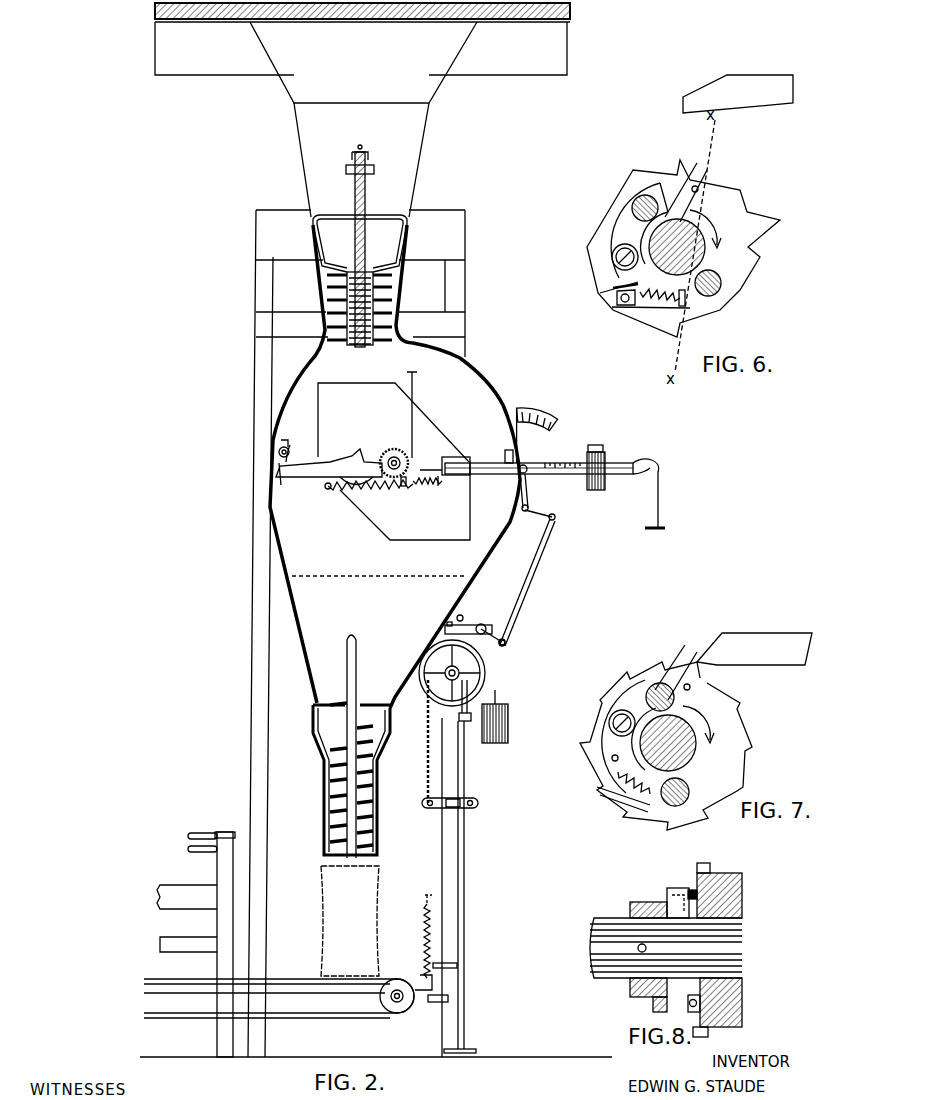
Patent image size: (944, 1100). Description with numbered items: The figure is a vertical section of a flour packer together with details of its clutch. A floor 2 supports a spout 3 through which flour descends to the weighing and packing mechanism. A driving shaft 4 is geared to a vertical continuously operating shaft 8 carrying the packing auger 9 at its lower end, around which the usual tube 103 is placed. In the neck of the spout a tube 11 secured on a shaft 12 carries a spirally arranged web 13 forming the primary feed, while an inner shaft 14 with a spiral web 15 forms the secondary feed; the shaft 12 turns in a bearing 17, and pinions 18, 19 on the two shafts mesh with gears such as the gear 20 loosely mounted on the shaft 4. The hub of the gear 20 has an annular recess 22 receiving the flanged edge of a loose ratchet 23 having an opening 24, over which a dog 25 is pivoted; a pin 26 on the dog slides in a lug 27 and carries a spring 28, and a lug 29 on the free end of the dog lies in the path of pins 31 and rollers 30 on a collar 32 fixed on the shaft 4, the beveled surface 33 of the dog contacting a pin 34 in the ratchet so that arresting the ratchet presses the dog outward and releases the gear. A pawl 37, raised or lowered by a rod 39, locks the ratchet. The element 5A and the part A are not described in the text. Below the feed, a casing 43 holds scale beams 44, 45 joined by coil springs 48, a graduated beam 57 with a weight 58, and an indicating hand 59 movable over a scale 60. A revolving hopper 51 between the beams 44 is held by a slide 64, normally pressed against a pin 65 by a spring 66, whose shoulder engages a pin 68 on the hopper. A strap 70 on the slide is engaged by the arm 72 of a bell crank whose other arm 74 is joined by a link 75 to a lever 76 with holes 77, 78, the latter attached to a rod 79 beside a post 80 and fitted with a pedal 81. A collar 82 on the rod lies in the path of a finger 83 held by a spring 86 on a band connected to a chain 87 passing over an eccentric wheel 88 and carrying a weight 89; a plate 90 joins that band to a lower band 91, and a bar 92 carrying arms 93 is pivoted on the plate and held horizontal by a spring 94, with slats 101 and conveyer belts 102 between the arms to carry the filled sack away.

In FIG. 2, the floor 2 is at (572, 14).
In FIG. 2, the spout 3 is at (361, 119).
In FIG. 2, the driving shaft 4 is at (362, 146).
In FIG. 2, the pinion 19 is at (368, 156).
In FIG. 2, the pinion 18 is at (374, 170).
In FIG. 2, the bearing 17 is at (354, 203).
In FIG. 2, the shaft 14 is at (367, 203).
In FIG. 2, the shaft 12 is at (378, 243).
In FIG. 2, the spirally arranged web 13 is at (347, 280).
In FIG. 2, the tube 11 is at (370, 340).
In FIG. 2, the spiral web 15 is at (352, 348).
In FIG. 2, the rod 39 is at (415, 375).
In FIG. 2, the revolving hopper 51 is at (360, 414).
In FIG. 2, the pin 68 is at (351, 426).
In FIG. 2, the pin 65 is at (438, 470).
In FIG. 2, the slide 64 is at (458, 457).
In FIG. 2, the scale beam 44 is at (474, 462).
In FIG. 2, the scale 60 is at (540, 412).
In FIG. 2, the indicating hand 59 is at (530, 446).
In FIG. 2, the graduated beam 57 is at (653, 457).
In FIG. 2, the scale beam 45 is at (329, 462).
In FIG. 2, the coil spring 48 is at (330, 490).
In FIG. 2, the gear 5A is at (392, 468).
In FIG. 2, the spring 66 is at (428, 484).
In FIG. 2, the strap 70 is at (505, 470).
In FIG. 2, the arm 72 is at (530, 494).
In FIG. 2, the arm 74 is at (555, 517).
In FIG. 2, the weight 58 is at (597, 490).
In FIG. 2, the link 75 is at (548, 538).
In FIG. 2, the shell or casing 43 is at (283, 548).
In FIG. 2, the hole 77 is at (462, 616).
In FIG. 2, the hole 78 is at (470, 624).
In FIG. 2, the lever 76 is at (505, 640).
In FIG. 2, the vertical continuously operating shaft 8 is at (357, 665).
In FIG. 2, the eccentrically mounted wheel 88 is at (486, 668).
In FIG. 2, the chain 87 is at (487, 690).
In FIG. 2, the adjustable collar 82 is at (458, 718).
In FIG. 2, the weight 89 is at (509, 728).
In FIG. 2, the post 80 is at (442, 750).
In FIG. 2, the longitudinally movable rod 79 is at (468, 765).
In FIG. 2, the spring 86 is at (458, 800).
In FIG. 2, the finger 83 is at (470, 808).
In FIG. 2, the packing auger 9 is at (330, 797).
In FIG. 2, the tube 103 is at (378, 832).
In FIG. 2, the plate 90 is at (440, 880).
In FIG. 2, the spring 94 is at (424, 944).
In FIG. 2, the laterally extending arms 93 is at (410, 973).
In FIG. 2, the band 91 is at (458, 965).
In FIG. 2, the bar 92 is at (449, 999).
In FIG. 2, the slats 101 is at (292, 990).
In FIG. 2, the conveyer belts 102 is at (392, 1014).
In FIG. 2, the pedal 81 is at (477, 1050).
In FIG. 6, the pawl 37 is at (766, 100).
In FIG. 7, the pawl 37 is at (754, 649).
In FIG. 6, the lug 29 is at (700, 172).
In FIG. 7, the lug 29 is at (672, 668).
In FIG. 8, the lug 29 is at (678, 888).
In FIG. 6, the pin 34 is at (699, 188).
In FIG. 7, the pin 34 is at (691, 687).
In FIG. 8, the pin 34 is at (698, 896).
In FIG. 6, the roller 30 is at (640, 200).
In FIG. 7, the roller 30 is at (688, 788).
In FIG. 8, the roller 30 is at (678, 905).
In FIG. 6, the pin 31 is at (636, 210).
In FIG. 7, the pin 31 is at (672, 705).
In FIG. 8, the pin 31 is at (659, 883).
In FIG. 6, the inclined or beveled surface 33 is at (695, 212).
In FIG. 7, the inclined or beveled surface 33 is at (700, 682).
In FIG. 6, the dog 25 is at (631, 228).
In FIG. 7, the dog 25 is at (602, 688).
In FIG. 6, the shaft A is at (692, 238).
In FIG. 7, the shaft A is at (688, 736).
In FIG. 8, the shaft A is at (735, 925).
In FIG. 6, the opening 24 is at (612, 296).
In FIG. 6, the pin 26 is at (636, 305).
In FIG. 7, the pin 26 is at (612, 748).
In FIG. 6, the spring 28 is at (630, 306).
In FIG. 7, the spring 28 is at (618, 779).
In FIG. 6, the lug 27 is at (672, 309).
In FIG. 7, the lug 27 is at (640, 790).
In FIG. 8, the lug 27 is at (686, 1009).
In FIG. 6, the ratchet 23 is at (683, 248).
In FIG. 7, the ratchet 23 is at (745, 738).
In FIG. 8, the annular recess 22 is at (712, 880).
In FIG. 8, the collar 32 is at (648, 902).
In FIG. 8, the gear 20 is at (744, 1003).